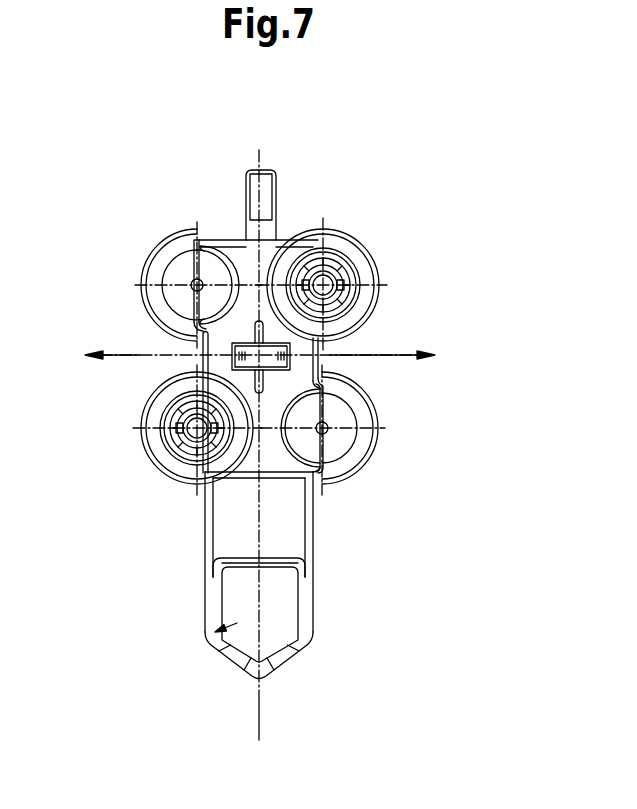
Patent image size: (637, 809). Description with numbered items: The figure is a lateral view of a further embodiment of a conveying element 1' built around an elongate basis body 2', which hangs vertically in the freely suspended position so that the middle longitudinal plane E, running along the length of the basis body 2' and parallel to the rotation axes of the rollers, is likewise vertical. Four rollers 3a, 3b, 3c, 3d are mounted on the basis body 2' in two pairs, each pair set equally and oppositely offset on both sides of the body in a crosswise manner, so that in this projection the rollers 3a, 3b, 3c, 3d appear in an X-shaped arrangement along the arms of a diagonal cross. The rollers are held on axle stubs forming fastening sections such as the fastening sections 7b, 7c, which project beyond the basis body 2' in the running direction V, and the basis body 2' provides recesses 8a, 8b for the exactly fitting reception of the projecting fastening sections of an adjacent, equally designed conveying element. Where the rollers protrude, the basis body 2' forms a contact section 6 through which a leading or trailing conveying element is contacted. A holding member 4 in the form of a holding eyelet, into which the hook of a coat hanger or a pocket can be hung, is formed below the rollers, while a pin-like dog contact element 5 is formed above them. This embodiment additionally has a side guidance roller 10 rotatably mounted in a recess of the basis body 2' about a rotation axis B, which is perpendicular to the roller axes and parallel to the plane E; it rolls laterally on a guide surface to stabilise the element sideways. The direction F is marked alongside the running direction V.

The conveying element 1' is at (399, 163).
The basis body 2' is at (228, 436).
The roller 3a is at (360, 237).
The roller 3b is at (179, 469).
The roller 3c is at (186, 240).
The roller 3d is at (347, 464).
The holding member 4 is at (207, 637).
The dog contact element 5 is at (253, 192).
The contact section 6 is at (320, 387).
The fastening section 7b is at (338, 438).
The fastening section 7c is at (178, 280).
The recess 8a is at (208, 270).
The recess 8b is at (307, 418).
The side guidance roller 10 is at (231, 350).
The rotation axis B is at (255, 333).
The force direction F is at (138, 356).
The running direction V is at (368, 356).
The middle longitudinal plane E is at (259, 698).